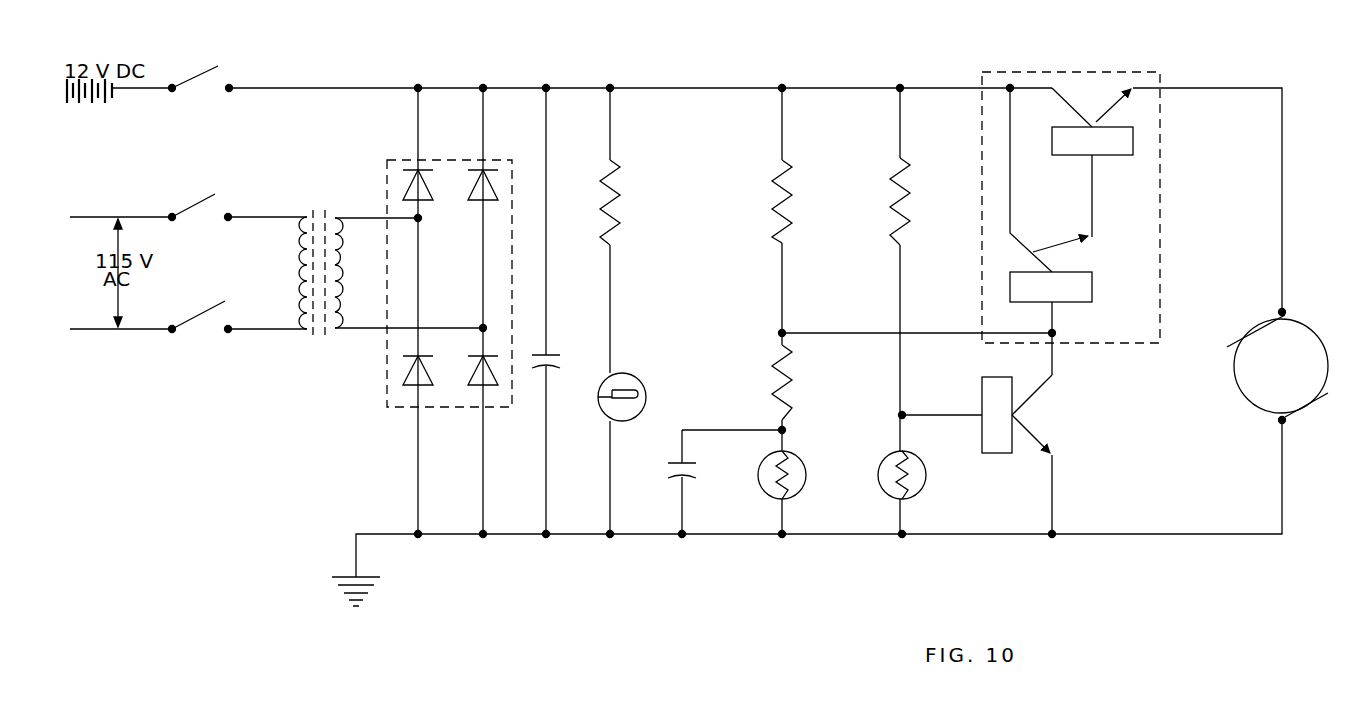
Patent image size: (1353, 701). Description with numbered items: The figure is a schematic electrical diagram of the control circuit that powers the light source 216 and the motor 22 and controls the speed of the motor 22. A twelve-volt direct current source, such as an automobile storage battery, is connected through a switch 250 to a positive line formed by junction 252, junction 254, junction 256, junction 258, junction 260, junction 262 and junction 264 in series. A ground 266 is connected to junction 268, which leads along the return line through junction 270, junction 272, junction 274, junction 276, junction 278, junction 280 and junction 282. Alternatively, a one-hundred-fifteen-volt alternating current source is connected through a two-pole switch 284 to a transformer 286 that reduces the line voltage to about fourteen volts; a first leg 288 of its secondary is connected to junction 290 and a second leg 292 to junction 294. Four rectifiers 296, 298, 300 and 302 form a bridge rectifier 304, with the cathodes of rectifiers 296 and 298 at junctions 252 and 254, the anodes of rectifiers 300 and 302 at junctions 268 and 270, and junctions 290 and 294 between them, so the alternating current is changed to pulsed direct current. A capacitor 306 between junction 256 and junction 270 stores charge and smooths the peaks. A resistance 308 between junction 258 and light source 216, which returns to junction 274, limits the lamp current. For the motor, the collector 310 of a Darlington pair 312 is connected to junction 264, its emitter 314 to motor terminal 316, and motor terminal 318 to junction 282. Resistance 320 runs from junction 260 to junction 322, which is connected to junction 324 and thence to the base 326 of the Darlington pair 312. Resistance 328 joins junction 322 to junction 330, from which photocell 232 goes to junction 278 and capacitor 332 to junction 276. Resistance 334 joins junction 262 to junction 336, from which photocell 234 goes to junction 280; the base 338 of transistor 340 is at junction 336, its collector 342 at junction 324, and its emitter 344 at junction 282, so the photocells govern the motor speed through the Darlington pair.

The switch 250 is at (218, 68).
The junction 252 is at (418, 86).
The junction 254 is at (483, 86).
The junction 256 is at (548, 86).
The junction 258 is at (612, 86).
The junction 260 is at (782, 86).
The junction 262 is at (900, 86).
The junction 264 is at (1010, 86).
The ground 266 is at (348, 604).
The junction 268 is at (420, 538).
The junction 270 is at (486, 538).
The junction 272 is at (550, 538).
The junction 274 is at (614, 538).
The junction 276 is at (684, 538).
The junction 278 is at (786, 538).
The junction 280 is at (906, 538).
The junction 282 is at (1048, 538).
The two-pole switch 284 is at (193, 208).
The transformer 286 is at (322, 330).
The first leg of the secondary side 288 is at (370, 218).
The junction 290 is at (420, 220).
The second leg of the secondary side 292 is at (375, 330).
The junction 294 is at (480, 326).
The rectifier 296 is at (398, 186).
The rectifier 298 is at (472, 178).
The rectifier 300 is at (420, 348).
The rectifier 302 is at (468, 372).
The bridge rectifier 304 is at (422, 311).
The capacitor 306 is at (548, 350).
The resistance 308 is at (612, 228).
The light source 216 is at (638, 380).
The collector 310 is at (1060, 218).
The Darlington pair 312 is at (1071, 204).
The emitter 314 is at (1116, 105).
The motor terminal 316 is at (1309, 302).
The motor terminal 318 is at (1312, 434).
The motor 22 is at (1290, 365).
The resistance 320 is at (790, 198).
The junction 322 is at (780, 334).
The junction 324 is at (1056, 332).
The base 326 is at (1052, 318).
The resistance 328 is at (776, 386).
The junction 330 is at (780, 430).
The capacitor 332 is at (684, 480).
The photocell 232 is at (806, 492).
The resistance 334 is at (892, 232).
The junction 336 is at (900, 415).
The base 338 is at (980, 417).
The transistor 340 is at (1004, 452).
The collector 342 is at (1038, 392).
The emitter 344 is at (1040, 440).
The photocell 234 is at (927, 478).